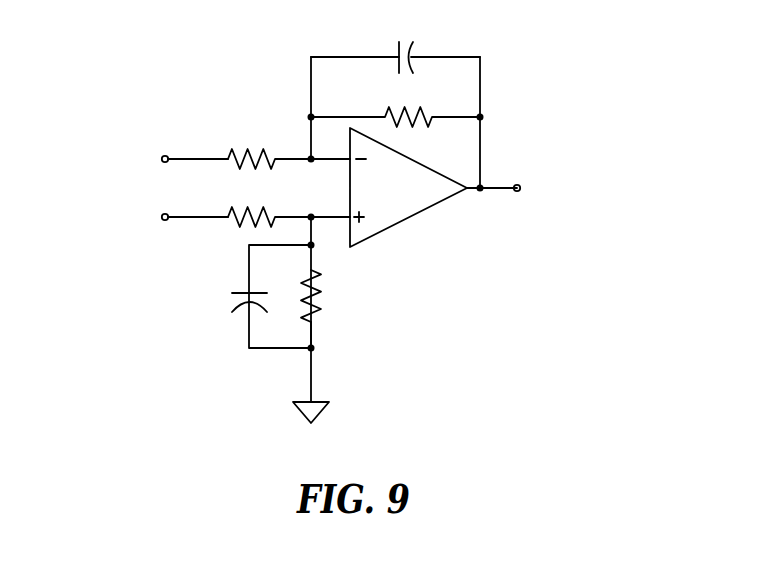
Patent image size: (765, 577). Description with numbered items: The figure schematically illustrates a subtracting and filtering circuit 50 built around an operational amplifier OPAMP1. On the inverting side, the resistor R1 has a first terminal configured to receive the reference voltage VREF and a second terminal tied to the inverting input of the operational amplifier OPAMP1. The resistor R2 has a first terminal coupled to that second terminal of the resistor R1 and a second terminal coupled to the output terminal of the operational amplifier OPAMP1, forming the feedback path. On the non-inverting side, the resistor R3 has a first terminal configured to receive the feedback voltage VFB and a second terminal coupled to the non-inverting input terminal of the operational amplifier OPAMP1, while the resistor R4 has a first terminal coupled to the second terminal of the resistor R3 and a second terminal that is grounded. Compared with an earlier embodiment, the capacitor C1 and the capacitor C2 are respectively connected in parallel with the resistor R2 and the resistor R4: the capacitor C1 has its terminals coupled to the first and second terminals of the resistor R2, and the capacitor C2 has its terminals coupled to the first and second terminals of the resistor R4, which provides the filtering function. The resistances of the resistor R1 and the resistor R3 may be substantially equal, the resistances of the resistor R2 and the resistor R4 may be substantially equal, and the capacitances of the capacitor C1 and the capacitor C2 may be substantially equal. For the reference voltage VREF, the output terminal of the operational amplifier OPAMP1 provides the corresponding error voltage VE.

The subtracting and filtering circuit 50 is at (333, 217).
The capacitor C1 is at (395, 42).
The resistor R2 is at (395, 101).
The operational amplifier OPAMP1 is at (408, 187).
The error voltage VE is at (513, 191).
The reference voltage VREF is at (167, 153).
The resistor R1 is at (289, 141).
The feedback voltage VFB is at (172, 211).
The resistor R3 is at (289, 200).
The capacitor C2 is at (229, 301).
The resistor R4 is at (294, 296).